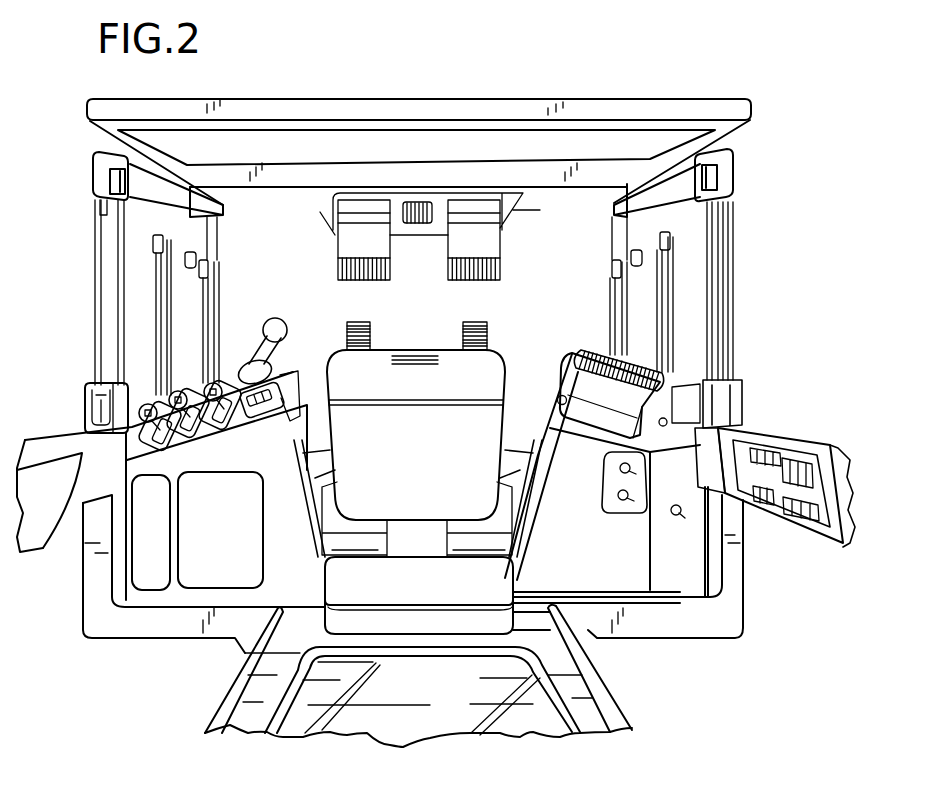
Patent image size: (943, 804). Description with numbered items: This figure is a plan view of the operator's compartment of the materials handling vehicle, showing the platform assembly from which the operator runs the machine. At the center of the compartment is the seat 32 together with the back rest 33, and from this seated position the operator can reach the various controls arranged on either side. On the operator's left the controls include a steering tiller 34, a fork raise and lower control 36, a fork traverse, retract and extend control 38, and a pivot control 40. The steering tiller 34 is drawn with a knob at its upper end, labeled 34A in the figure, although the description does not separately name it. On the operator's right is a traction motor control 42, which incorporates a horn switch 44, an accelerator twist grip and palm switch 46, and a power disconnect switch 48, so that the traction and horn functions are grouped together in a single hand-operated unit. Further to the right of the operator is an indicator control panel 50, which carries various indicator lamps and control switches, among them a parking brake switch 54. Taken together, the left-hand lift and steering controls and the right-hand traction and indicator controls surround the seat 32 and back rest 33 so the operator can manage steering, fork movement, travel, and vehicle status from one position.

The seat 32 is at (434, 460).
The back rest 33 is at (437, 597).
The steering tiller 34 is at (255, 414).
The control lever knob 34A is at (270, 318).
The fork raise and lower control 36 is at (216, 384).
The fork traverse, retract and extend control 38 is at (180, 392).
The pivot control 40 is at (143, 400).
The traction motor control 42 is at (641, 354).
The horn switch 44 is at (557, 399).
The accelerator twist grip and palm switch 46 is at (662, 380).
The power disconnect switch 48 is at (663, 426).
The indicator control panel 50 is at (828, 540).
The parking brake switch 54 is at (776, 452).